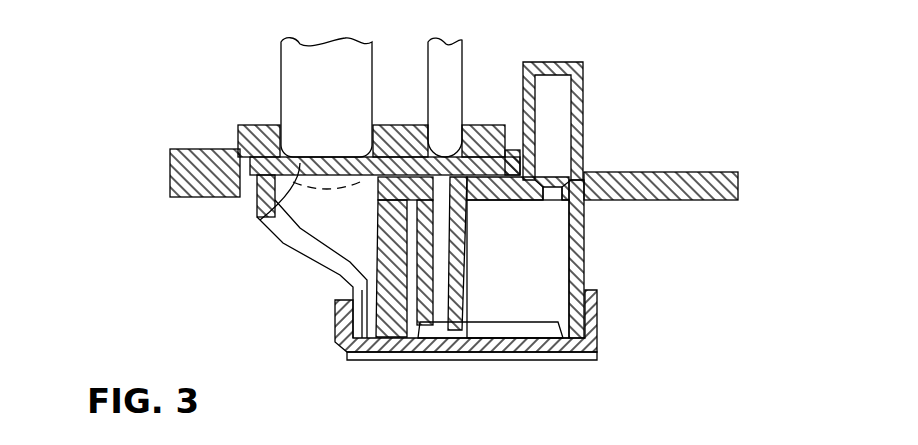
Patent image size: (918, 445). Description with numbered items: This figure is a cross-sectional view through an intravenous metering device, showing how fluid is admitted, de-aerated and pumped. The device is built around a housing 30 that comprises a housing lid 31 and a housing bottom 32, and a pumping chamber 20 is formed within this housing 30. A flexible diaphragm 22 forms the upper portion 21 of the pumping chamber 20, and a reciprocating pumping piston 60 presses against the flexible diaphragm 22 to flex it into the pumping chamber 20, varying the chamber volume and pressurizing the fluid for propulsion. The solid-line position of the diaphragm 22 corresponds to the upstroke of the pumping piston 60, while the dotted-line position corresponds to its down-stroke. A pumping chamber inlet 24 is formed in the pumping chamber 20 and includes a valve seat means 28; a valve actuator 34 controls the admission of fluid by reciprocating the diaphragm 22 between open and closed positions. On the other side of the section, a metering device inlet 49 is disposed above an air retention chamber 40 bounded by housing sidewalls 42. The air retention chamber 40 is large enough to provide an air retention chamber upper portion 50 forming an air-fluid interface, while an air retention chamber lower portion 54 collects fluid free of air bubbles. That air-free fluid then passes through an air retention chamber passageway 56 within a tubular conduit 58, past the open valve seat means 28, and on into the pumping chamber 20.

The pumping chamber 20 is at (300, 225).
The upper portion 21 is at (260, 217).
The flexible diaphragm 22 is at (243, 163).
The pumping chamber inlet 24 is at (393, 160).
The valve seat means 28 is at (448, 160).
The housing 30 is at (300, 260).
The housing lid 31 is at (257, 128).
The housing bottom 32 is at (587, 356).
The valve actuator 34 is at (458, 52).
The air retention chamber 40 is at (548, 218).
The housing sidewalls 42 is at (582, 266).
The metering device inlet 49 is at (562, 68).
The air retention chamber upper portion 50 is at (558, 226).
The air retention chamber lower portion 54 is at (547, 330).
The air retention chamber passageway 56 is at (435, 330).
The tubular conduit 58 is at (442, 315).
The pumping piston 60 is at (293, 58).